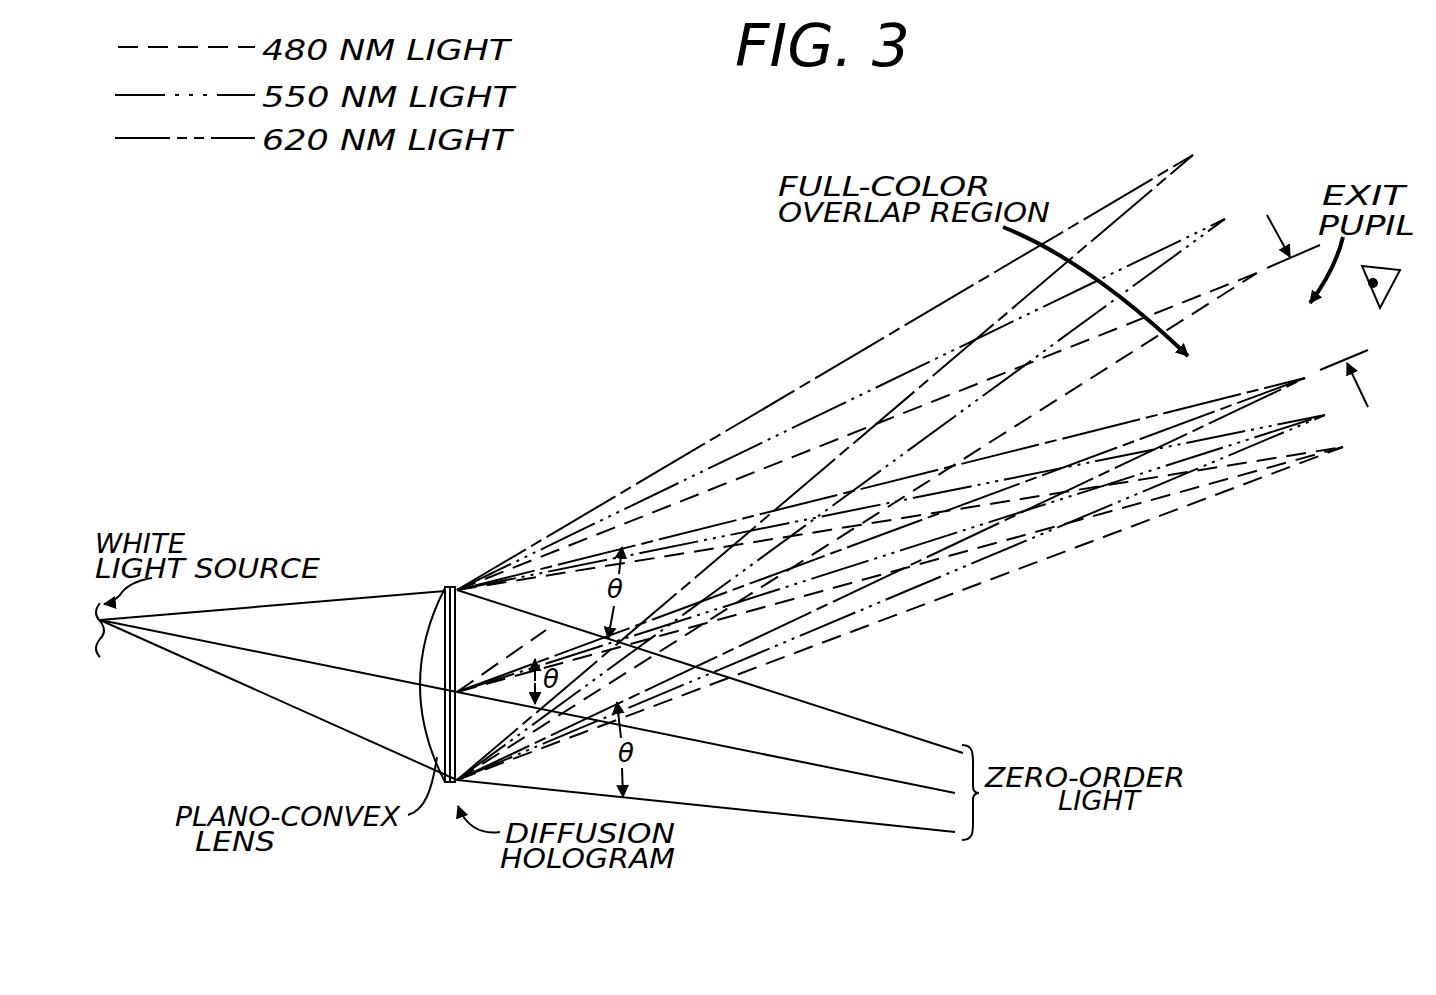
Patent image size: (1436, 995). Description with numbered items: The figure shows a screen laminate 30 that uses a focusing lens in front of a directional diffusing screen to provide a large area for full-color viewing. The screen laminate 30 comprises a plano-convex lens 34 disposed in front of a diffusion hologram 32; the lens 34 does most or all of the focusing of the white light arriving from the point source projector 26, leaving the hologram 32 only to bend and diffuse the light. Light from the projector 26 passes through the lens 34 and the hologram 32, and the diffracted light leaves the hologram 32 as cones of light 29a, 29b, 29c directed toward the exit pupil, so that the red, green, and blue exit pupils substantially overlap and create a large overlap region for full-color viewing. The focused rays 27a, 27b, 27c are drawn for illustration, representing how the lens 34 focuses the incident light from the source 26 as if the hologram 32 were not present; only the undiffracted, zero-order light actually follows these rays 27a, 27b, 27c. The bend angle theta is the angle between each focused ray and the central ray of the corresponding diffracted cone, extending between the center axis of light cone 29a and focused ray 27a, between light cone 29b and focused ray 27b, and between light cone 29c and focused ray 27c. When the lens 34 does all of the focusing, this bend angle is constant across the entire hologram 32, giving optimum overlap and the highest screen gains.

The point source projector 26 is at (102, 640).
The screen laminate 30 is at (468, 572).
The diffusion hologram 32 is at (458, 786).
The plano-convex lens 34 is at (437, 742).
The focused ray 27a is at (741, 758).
The focused ray 27b is at (860, 724).
The focused ray 27c is at (826, 819).
The light cone 29a is at (508, 655).
The light cone 29b is at (553, 530).
The light cone 29c is at (552, 748).